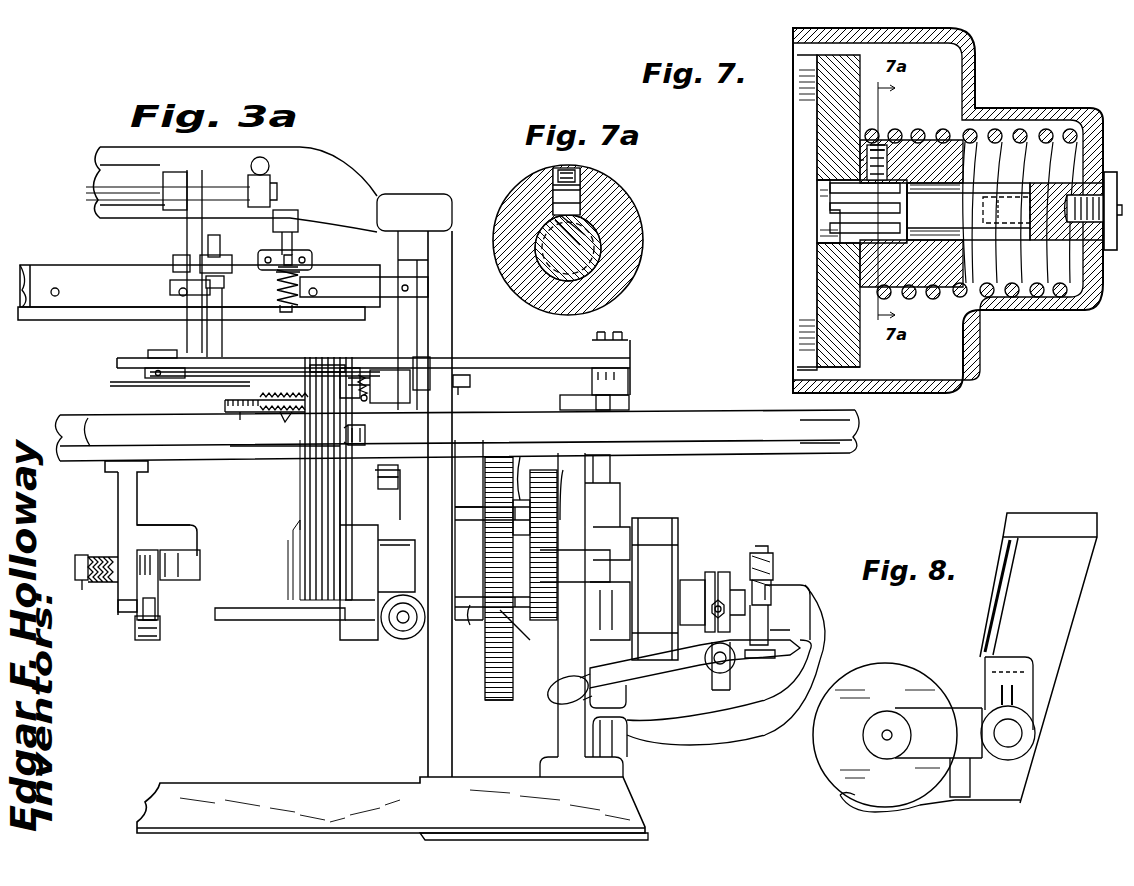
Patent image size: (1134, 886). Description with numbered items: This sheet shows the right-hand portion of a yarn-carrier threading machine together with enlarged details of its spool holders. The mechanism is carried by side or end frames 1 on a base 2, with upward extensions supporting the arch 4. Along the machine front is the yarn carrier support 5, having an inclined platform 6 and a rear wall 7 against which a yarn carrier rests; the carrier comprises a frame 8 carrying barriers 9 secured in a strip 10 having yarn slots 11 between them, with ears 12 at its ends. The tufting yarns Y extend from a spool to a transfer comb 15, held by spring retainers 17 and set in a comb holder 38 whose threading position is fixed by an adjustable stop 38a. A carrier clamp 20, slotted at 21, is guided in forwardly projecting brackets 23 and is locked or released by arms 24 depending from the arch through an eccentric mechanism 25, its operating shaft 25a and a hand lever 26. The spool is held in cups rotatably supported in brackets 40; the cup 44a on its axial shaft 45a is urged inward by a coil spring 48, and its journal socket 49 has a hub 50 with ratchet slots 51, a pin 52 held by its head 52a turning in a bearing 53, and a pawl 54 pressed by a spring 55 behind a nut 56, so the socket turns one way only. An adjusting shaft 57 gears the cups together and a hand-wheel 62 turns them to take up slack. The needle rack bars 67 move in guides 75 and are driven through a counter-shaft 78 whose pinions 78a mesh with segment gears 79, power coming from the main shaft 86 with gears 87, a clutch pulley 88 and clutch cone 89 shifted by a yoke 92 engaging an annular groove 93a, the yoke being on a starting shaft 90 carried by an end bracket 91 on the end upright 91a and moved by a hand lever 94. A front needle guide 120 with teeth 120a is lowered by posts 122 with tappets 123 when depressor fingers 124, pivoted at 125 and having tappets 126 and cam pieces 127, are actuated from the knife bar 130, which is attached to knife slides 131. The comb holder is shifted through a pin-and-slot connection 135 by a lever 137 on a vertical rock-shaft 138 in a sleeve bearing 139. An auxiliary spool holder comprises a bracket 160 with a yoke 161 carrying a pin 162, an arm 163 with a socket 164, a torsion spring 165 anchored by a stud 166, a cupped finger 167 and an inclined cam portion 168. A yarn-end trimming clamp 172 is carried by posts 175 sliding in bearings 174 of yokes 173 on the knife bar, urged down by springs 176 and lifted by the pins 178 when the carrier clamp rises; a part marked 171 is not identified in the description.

In FIG. 3A, the side or end frames 1 is at (440, 262).
In FIG. 3A, the base 2 is at (250, 785).
In FIG. 3A, the top member or arch 4 is at (100, 157).
In FIG. 3A, the yarn carrier support 5 is at (855, 425).
In FIG. 3A, the platform 6 is at (825, 445).
In FIG. 3A, the rear wall 7 is at (68, 420).
In FIG. 3A, the carrier frame 8 is at (245, 440).
In FIG. 3A, the barriers or guides 9 is at (245, 400).
In FIG. 3A, the attaching strip 10 is at (225, 406).
In FIG. 3A, the yarn guiding slots 11 is at (237, 415).
In FIG. 3A, the suspension ears 12 is at (366, 430).
In FIG. 3A, the transfer comb 15 is at (125, 382).
In FIG. 3A, the spring retainers 17 is at (368, 382).
In FIG. 3A, the carrier clamp 20 is at (260, 412).
In FIG. 3A, the slot 21 is at (284, 428).
In FIG. 3A, the forwardly projecting brackets 23 is at (430, 360).
In FIG. 3A, the arms 24 is at (190, 228).
In FIG. 3A, the adjustable eccentric mechanism 25 is at (195, 180).
In FIG. 3A, the operating shaft 25a is at (86, 192).
In FIG. 3A, the hand lever 26 is at (265, 158).
In FIG. 3A, the comb holder 38 is at (115, 363).
In FIG. 3A, the adjustable stop 38a is at (470, 380).
In FIG. 3A, the cup brackets 40 is at (358, 575).
In FIG. 7, the cup brackets 40 is at (975, 340).
In FIG. 7A, the cup 44a is at (643, 240).
In FIG. 7, the cup 44a is at (797, 180).
In FIG. 7, the cup shaft 45a is at (1050, 240).
In FIG. 7, the coil spring 48 is at (985, 118).
In FIG. 7, the journal socket portion 49 is at (838, 220).
In FIG. 7A, the socket hub 50 is at (610, 215).
In FIG. 7, the socket hub 50 is at (905, 183).
In FIG. 7A, the ratchet slots 51 is at (598, 205).
In FIG. 7, the ratchet slots 51 is at (860, 205).
In FIG. 7, the pin 52 is at (928, 240).
In FIG. 7, the pin head 52a is at (1010, 210).
In FIG. 7, the bearing 53 is at (928, 183).
In FIG. 7A, the pawl 54 is at (560, 192).
In FIG. 7, the pawl 54 is at (865, 172).
In FIG. 7A, the spring 55 is at (540, 192).
In FIG. 7, the spring 55 is at (830, 160).
In FIG. 7A, the nut 56 is at (572, 168).
In FIG. 7, the nut 56 is at (885, 145).
In FIG. 3A, the adjusting shaft 57 is at (262, 622).
In FIG. 3A, the hand-wheel 62 is at (403, 638).
In FIG. 3A, the needle rack bars 67 is at (398, 470).
In FIG. 3A, the guide 75 is at (398, 484).
In FIG. 3A, the counter-shaft 78 is at (475, 515).
In FIG. 3A, the pinions 78a is at (552, 500).
In FIG. 3A, the segment gears 79 is at (518, 458).
In FIG. 3A, the main shaft 86 is at (475, 612).
In FIG. 3A, the gears 87 is at (522, 633).
In FIG. 3A, the clutch pulley 88 is at (655, 522).
In FIG. 3A, the clutch cone 89 is at (692, 580).
In FIG. 3A, the starting shaft 90 is at (735, 660).
In FIG. 3A, the end bracket 91 is at (668, 735).
In FIG. 3A, the end upright 91a is at (575, 657).
In FIG. 3A, the yoke 92 is at (720, 637).
In FIG. 3A, the annular groove 93a is at (720, 572).
In FIG. 3A, the hand lever 94 is at (562, 690).
In FIG. 3A, the front needle guide 120 is at (390, 372).
In FIG. 3A, the guide teeth 120a is at (312, 351).
In FIG. 3A, the upright posts 122 is at (222, 330).
In FIG. 3A, the adjustable tappets 123 is at (195, 283).
In FIG. 3A, the depressor fingers 124 is at (222, 258).
In FIG. 3A, the pivot 125 is at (176, 260).
In FIG. 3A, the adjustable tappets 126 is at (224, 282).
In FIG. 3A, the cam pieces 127 is at (218, 240).
In FIG. 3A, the knife bar 130 is at (38, 268).
In FIG. 3A, the knife slides 131 is at (405, 310).
In FIG. 3A, the pin and slot connection 135 is at (618, 340).
In FIG. 3A, the holder shifting lever 137 is at (628, 375).
In FIG. 3A, the vertical rock-shaft 138 is at (615, 500).
In FIG. 3A, the sleeve bearing 139 is at (630, 400).
In FIG. 3A, the bracket 160 is at (125, 486).
In FIG. 8, the bracket 160 is at (1000, 598).
In FIG. 3A, the yoke-like portion 161 is at (172, 530).
In FIG. 8, the yoke-like portion 161 is at (1015, 660).
In FIG. 3A, the pin 162 is at (172, 578).
In FIG. 8, the pin 162 is at (1012, 733).
In FIG. 3A, the arm 163 is at (152, 605).
In FIG. 8, the arm 163 is at (962, 718).
In FIG. 3A, the socket 164 is at (145, 625).
In FIG. 8, the socket 164 is at (887, 712).
In FIG. 3A, the spring 165 is at (100, 556).
In FIG. 3A, the stud 166 is at (82, 588).
In FIG. 3A, the cupped finger 167 is at (128, 600).
In FIG. 8, the cupped finger 167 is at (880, 808).
In FIG. 3A, the cam portion 168 is at (152, 590).
In FIG. 8, the cam portion 168 is at (960, 780).
In FIG. 3A, the bracket 171 is at (300, 252).
In FIG. 3A, the yarn-end trimming clamp 172 is at (155, 322).
In FIG. 3A, the yoke-like brackets 173 is at (292, 235).
In FIG. 3A, the slide bearings 174 is at (290, 212).
In FIG. 3A, the posts 175 is at (292, 230).
In FIG. 3A, the springs 176 is at (300, 300).
In FIG. 3A, the lifter pins 178 is at (296, 270).
In FIG. 3A, the tufting yarns Y is at (305, 465).